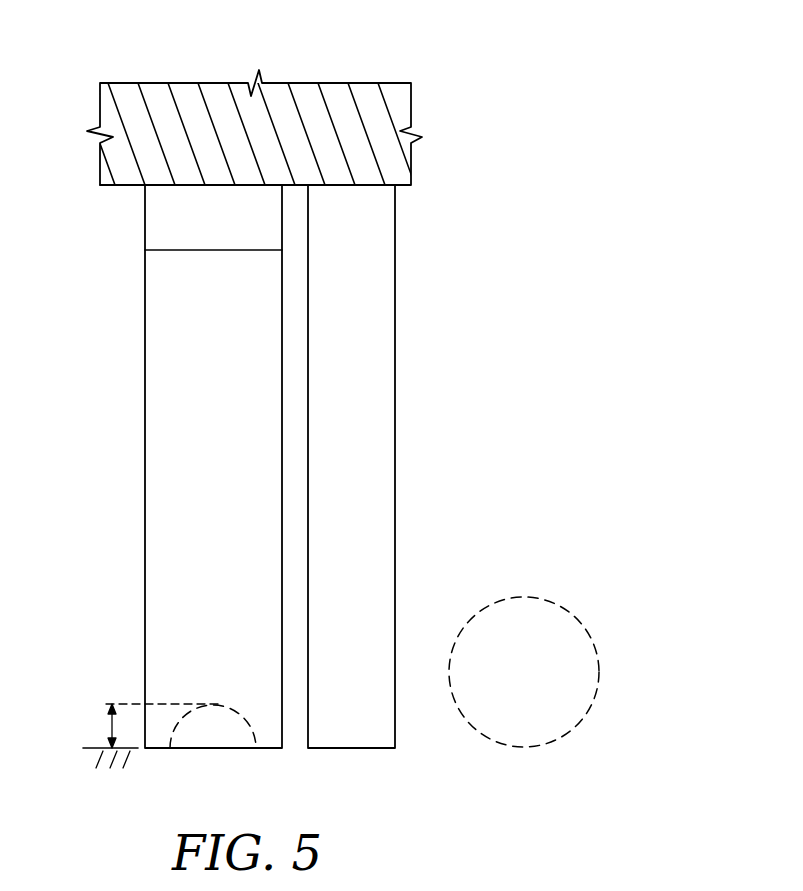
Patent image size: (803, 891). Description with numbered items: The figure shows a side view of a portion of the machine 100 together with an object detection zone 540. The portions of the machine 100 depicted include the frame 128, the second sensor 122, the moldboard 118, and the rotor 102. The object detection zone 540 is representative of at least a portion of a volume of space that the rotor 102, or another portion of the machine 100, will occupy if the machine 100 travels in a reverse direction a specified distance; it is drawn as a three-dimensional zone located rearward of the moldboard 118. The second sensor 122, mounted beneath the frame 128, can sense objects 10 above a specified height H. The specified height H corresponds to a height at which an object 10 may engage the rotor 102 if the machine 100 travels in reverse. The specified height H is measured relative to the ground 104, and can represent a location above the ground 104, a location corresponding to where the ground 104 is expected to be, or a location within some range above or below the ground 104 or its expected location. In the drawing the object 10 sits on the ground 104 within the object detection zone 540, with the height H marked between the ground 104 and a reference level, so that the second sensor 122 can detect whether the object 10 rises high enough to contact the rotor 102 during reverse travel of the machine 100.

The machine 100 is at (387, 65).
The object detection zone 540 is at (172, 487).
The moldboard 118 is at (373, 465).
The second sensor 122 is at (175, 225).
The frame 128 is at (137, 187).
The rotor 102 is at (597, 648).
The object 10 is at (216, 730).
The ground 104 is at (90, 750).
The specified height H is at (108, 728).